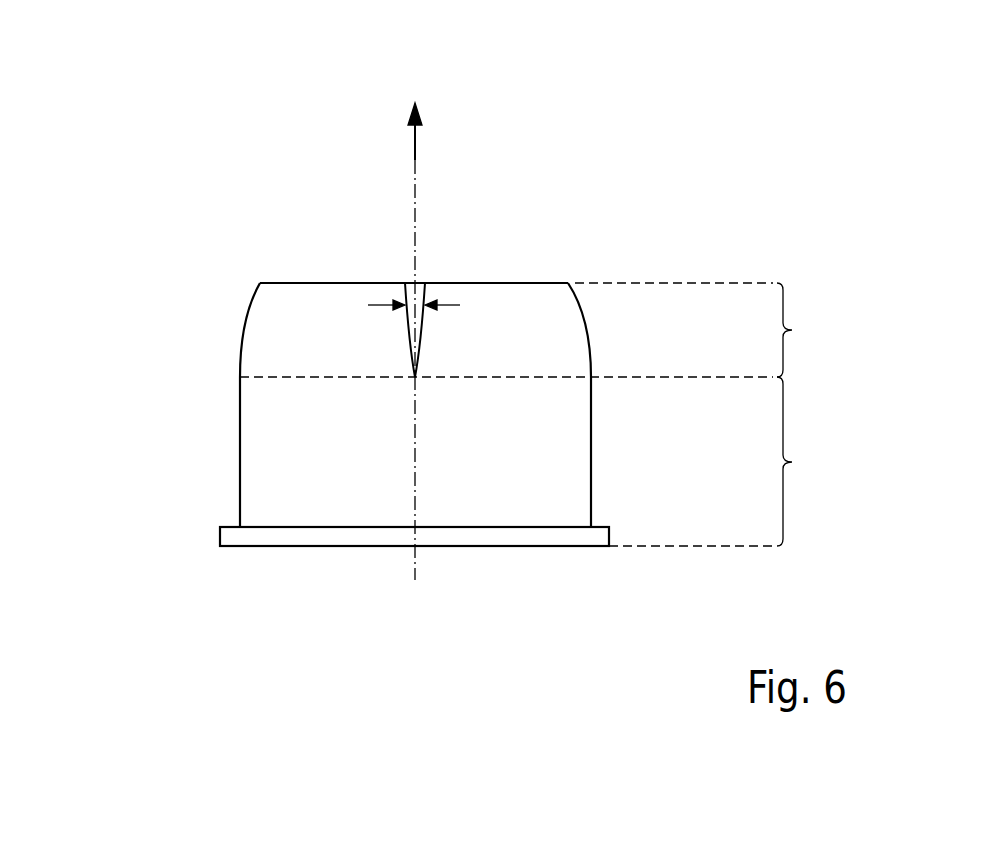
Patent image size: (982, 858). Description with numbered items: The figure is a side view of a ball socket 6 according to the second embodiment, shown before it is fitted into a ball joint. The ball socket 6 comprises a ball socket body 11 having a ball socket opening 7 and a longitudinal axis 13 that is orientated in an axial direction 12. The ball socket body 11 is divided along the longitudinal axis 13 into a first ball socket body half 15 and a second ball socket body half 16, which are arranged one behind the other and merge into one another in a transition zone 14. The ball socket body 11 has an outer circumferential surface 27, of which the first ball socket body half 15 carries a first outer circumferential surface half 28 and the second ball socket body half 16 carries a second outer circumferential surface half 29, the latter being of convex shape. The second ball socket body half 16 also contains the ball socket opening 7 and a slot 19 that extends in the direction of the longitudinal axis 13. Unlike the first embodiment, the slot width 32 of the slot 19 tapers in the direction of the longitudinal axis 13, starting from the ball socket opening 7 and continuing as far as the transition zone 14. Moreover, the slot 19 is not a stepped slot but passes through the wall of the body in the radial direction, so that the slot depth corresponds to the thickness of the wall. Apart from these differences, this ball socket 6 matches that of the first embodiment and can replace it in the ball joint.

The ball socket 6 is at (172, 197).
The ball socket opening 7 is at (538, 280).
The ball socket body 11 is at (237, 492).
The axial direction 12 is at (413, 135).
The longitudinal axis 13 is at (417, 210).
The transition zone 14 is at (596, 380).
The first ball socket body half 15 is at (722, 461).
The second ball socket body half 16 is at (705, 330).
The slot 19 is at (402, 330).
The outer circumferential surface 27 is at (237, 433).
The first outer circumferential surface half 28 is at (591, 458).
The second outer circumferential surface half 29 is at (583, 317).
The slot width 32 is at (383, 305).